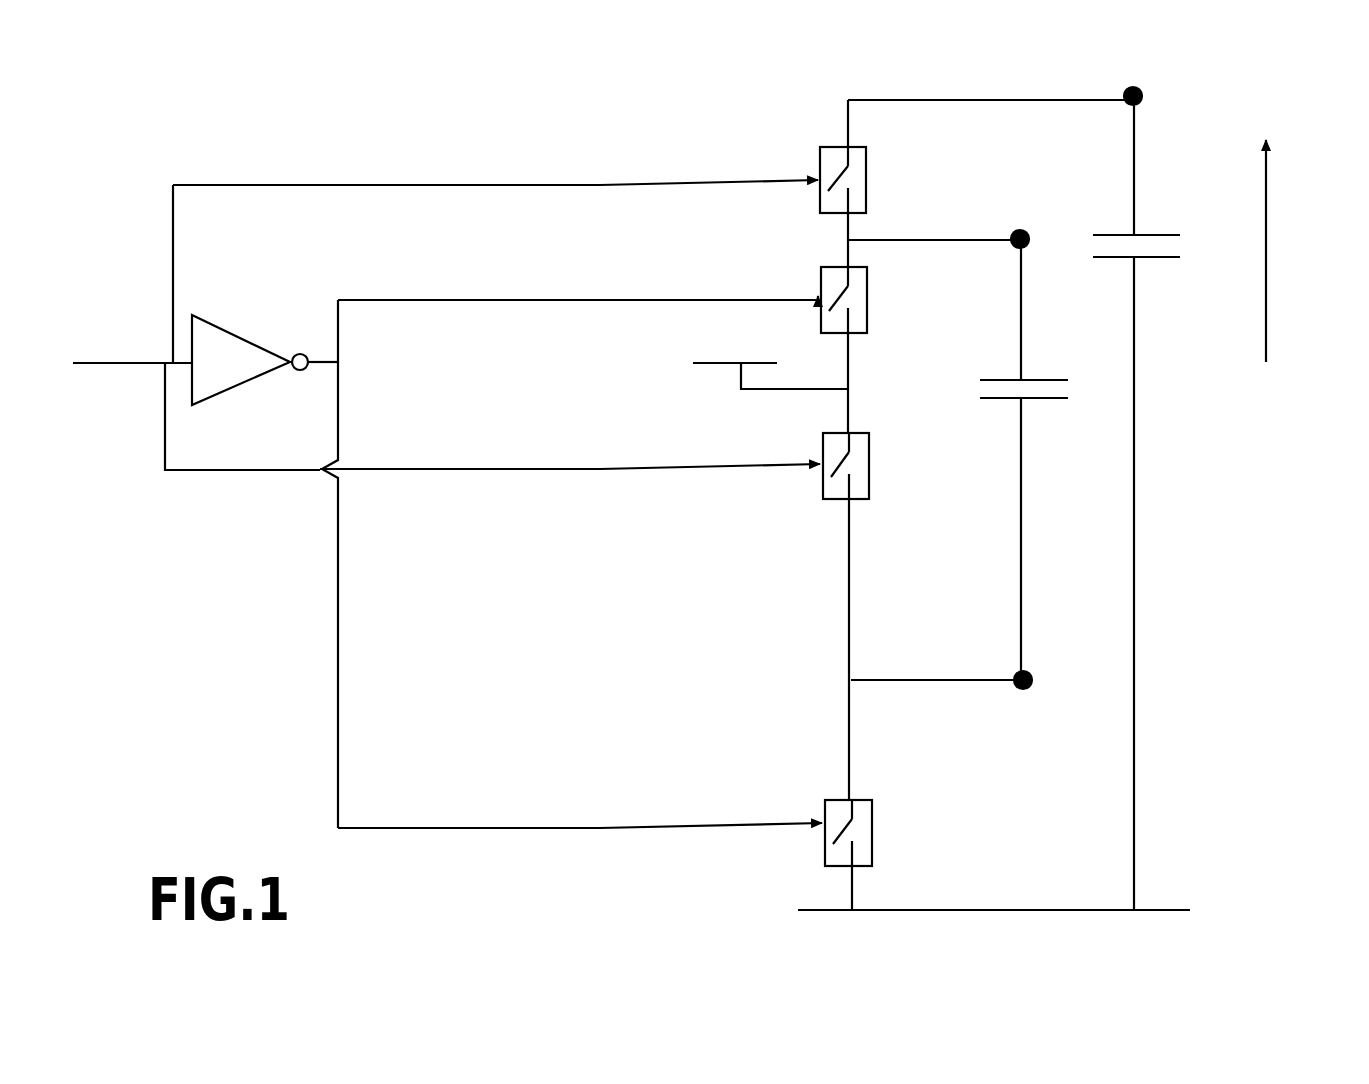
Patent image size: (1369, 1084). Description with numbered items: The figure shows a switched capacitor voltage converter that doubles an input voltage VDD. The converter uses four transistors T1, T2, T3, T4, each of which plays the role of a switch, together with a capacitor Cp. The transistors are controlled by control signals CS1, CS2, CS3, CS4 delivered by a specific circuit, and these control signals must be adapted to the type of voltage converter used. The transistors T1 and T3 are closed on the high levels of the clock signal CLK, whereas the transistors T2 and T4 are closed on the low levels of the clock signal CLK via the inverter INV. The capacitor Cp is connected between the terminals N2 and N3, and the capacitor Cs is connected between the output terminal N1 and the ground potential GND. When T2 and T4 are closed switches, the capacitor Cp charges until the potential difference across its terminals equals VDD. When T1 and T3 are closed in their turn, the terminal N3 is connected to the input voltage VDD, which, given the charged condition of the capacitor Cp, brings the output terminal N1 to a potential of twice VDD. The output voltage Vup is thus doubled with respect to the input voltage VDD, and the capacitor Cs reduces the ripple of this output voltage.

The clock signal CLK is at (117, 362).
The inverter INV is at (265, 346).
The control signal CS1 is at (476, 184).
The control signal CS2 is at (476, 299).
The control signal CS3 is at (478, 467).
The control signal CS4 is at (479, 827).
The transistor T1 is at (874, 180).
The transistor T2 is at (875, 300).
The transistor T3 is at (876, 466).
The transistor T4 is at (879, 833).
The input voltage VDD is at (770, 357).
The output terminal N1 is at (1170, 97).
The terminal N2 is at (1033, 215).
The terminal N3 is at (1060, 682).
The capacitor Cs is at (1149, 505).
The capacitor Cp is at (1037, 460).
The ground potential GND is at (994, 934).
The output voltage Vup is at (1305, 251).